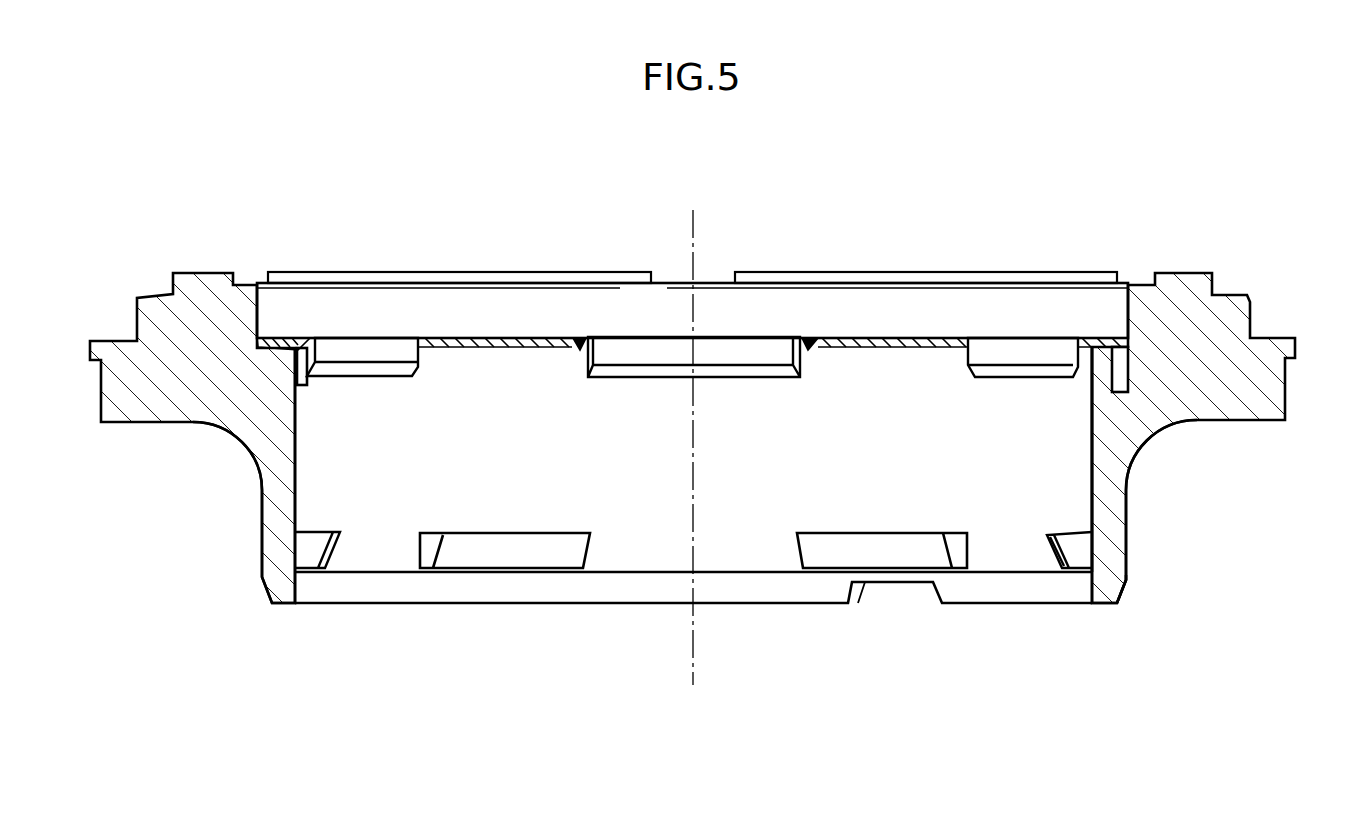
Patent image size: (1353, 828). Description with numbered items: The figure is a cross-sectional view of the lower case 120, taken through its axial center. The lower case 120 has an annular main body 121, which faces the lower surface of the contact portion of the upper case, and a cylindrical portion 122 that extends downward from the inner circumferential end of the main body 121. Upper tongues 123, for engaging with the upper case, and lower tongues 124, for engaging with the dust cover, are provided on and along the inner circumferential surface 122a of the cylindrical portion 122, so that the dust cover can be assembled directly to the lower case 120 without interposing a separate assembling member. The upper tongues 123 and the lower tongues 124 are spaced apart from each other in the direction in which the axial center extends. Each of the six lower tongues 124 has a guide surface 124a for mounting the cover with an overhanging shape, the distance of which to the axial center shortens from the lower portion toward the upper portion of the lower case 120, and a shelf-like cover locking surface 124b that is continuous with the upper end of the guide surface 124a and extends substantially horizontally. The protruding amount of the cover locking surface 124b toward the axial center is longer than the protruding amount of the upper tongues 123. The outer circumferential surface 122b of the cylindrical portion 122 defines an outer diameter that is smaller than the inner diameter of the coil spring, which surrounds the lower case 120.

The lower case 120 is at (1182, 208).
The annular main body 121 is at (1260, 370).
The cylindrical portion 122 is at (1113, 500).
The inner circumferential surface 122a is at (1090, 428).
The outer circumferential surface 122b is at (1127, 567).
The upper tongues 123 is at (365, 350).
The lower tongues 124 is at (502, 547).
The guide surface 124a is at (1057, 563).
The cover locking surface 124b is at (1072, 532).